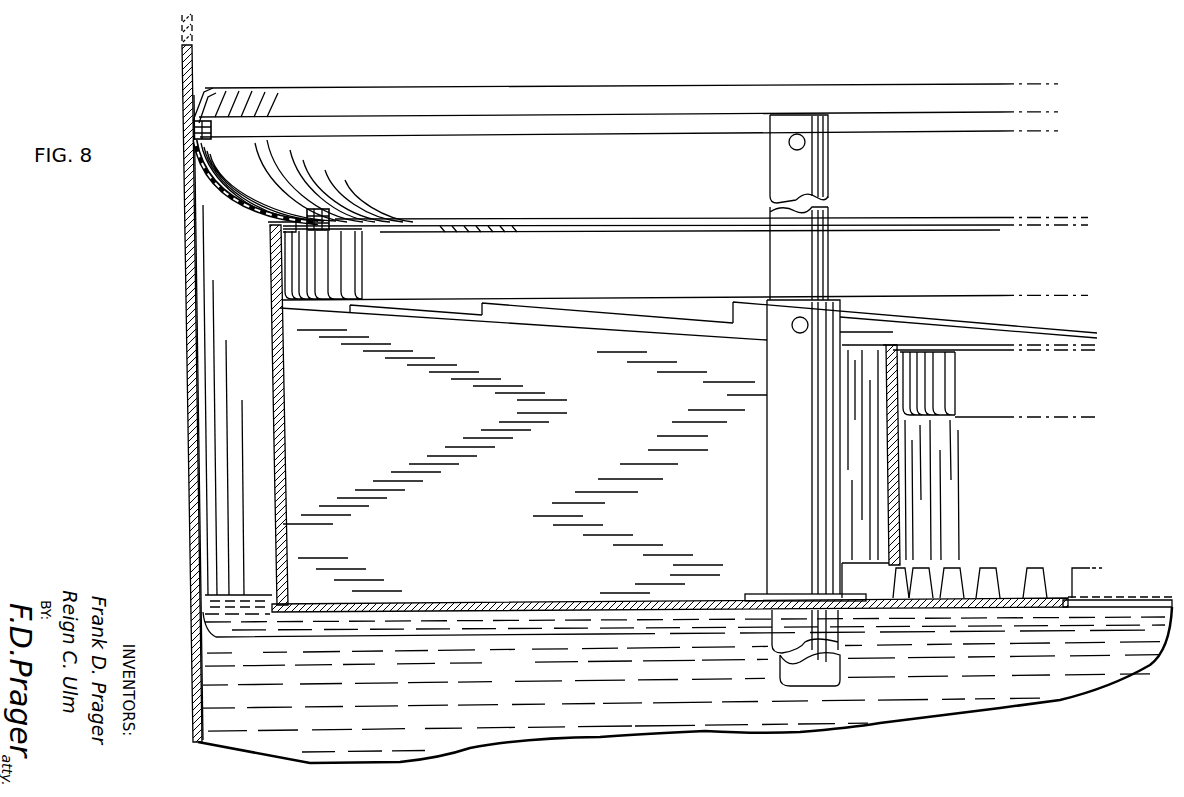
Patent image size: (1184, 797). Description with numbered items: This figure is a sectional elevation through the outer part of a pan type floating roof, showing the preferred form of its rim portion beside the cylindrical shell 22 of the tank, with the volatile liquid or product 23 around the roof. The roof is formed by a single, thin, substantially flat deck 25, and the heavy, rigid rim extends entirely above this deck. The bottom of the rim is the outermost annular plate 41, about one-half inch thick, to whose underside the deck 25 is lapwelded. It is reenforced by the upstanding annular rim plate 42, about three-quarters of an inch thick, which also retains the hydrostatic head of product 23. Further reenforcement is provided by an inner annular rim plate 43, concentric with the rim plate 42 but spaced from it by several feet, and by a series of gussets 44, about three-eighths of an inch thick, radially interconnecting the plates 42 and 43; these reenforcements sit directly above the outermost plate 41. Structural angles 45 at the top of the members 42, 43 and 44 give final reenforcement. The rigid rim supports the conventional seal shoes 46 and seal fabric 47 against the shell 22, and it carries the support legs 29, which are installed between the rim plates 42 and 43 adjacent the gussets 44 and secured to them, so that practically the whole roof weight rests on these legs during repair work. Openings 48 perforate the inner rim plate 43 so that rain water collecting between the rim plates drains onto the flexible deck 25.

The cylindrical shell 22 is at (183, 85).
The volatile liquid or product 23 is at (250, 597).
The single deck 25 is at (1118, 600).
The support legs 29 is at (832, 273).
The outermost annular plate 41 is at (525, 614).
The upstanding annular rim plate 42 is at (271, 383).
The inner annular rim plate 43 is at (901, 471).
The gussets 44 is at (487, 306).
The structural angles 45 is at (291, 258).
The seal shoes 46 is at (222, 101).
The seal fabric 47 is at (217, 178).
The openings 48 is at (1033, 569).